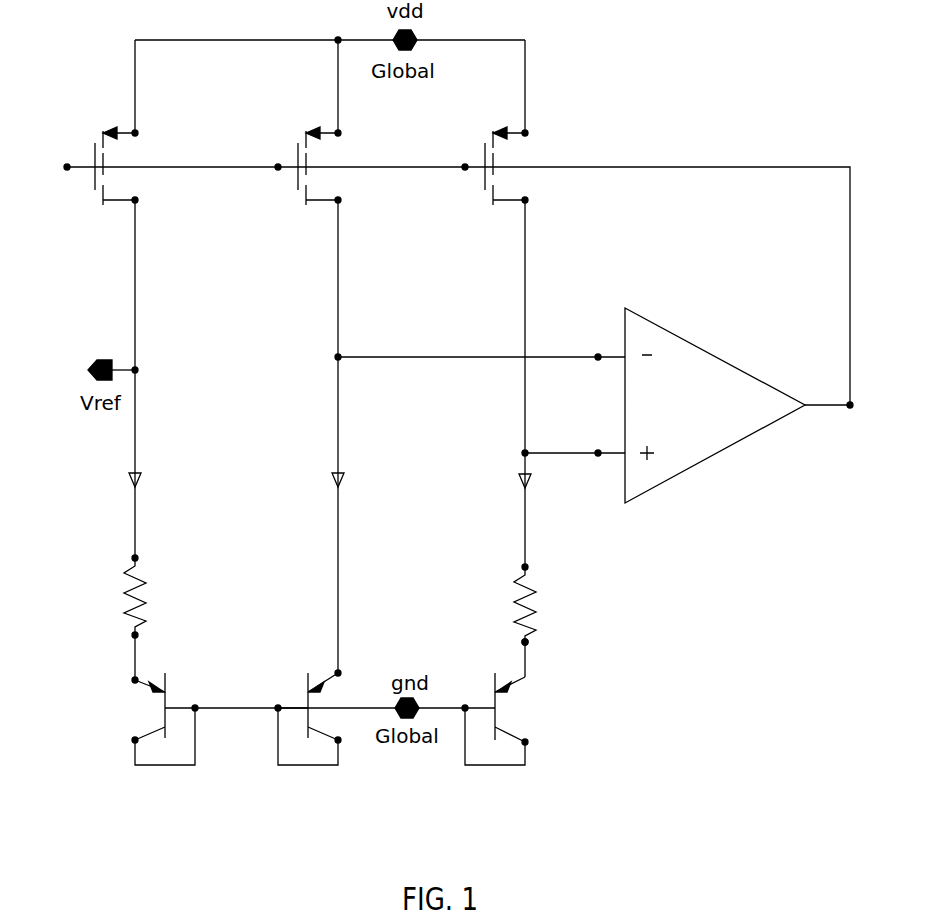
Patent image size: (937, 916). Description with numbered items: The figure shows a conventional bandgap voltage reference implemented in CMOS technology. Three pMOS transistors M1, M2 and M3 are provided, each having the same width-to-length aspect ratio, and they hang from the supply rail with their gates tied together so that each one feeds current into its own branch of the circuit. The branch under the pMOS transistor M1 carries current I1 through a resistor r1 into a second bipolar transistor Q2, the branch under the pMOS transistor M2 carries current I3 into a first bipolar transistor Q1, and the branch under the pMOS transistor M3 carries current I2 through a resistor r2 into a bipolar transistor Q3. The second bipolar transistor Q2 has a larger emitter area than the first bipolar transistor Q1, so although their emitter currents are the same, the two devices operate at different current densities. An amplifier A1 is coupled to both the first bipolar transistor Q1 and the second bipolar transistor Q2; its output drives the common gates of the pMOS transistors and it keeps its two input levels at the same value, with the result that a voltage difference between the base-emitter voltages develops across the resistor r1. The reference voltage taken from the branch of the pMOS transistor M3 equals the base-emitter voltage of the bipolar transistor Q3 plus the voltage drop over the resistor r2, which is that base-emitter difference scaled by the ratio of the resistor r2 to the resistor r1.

The pMOS transistor M1 is at (503, 149).
The pMOS transistor M2 is at (314, 150).
The pMOS transistor M3 is at (111, 150).
The amplifier A1 is at (737, 405).
The first bipolar transistor Q1 is at (320, 704).
The second bipolar transistor Q2 is at (498, 702).
The bipolar transistor Q3 is at (165, 704).
The resistor r1 is at (541, 604).
The resistor r2 is at (121, 596).
The current I1 is at (539, 493).
The current I2 is at (149, 488).
The current I3 is at (353, 488).